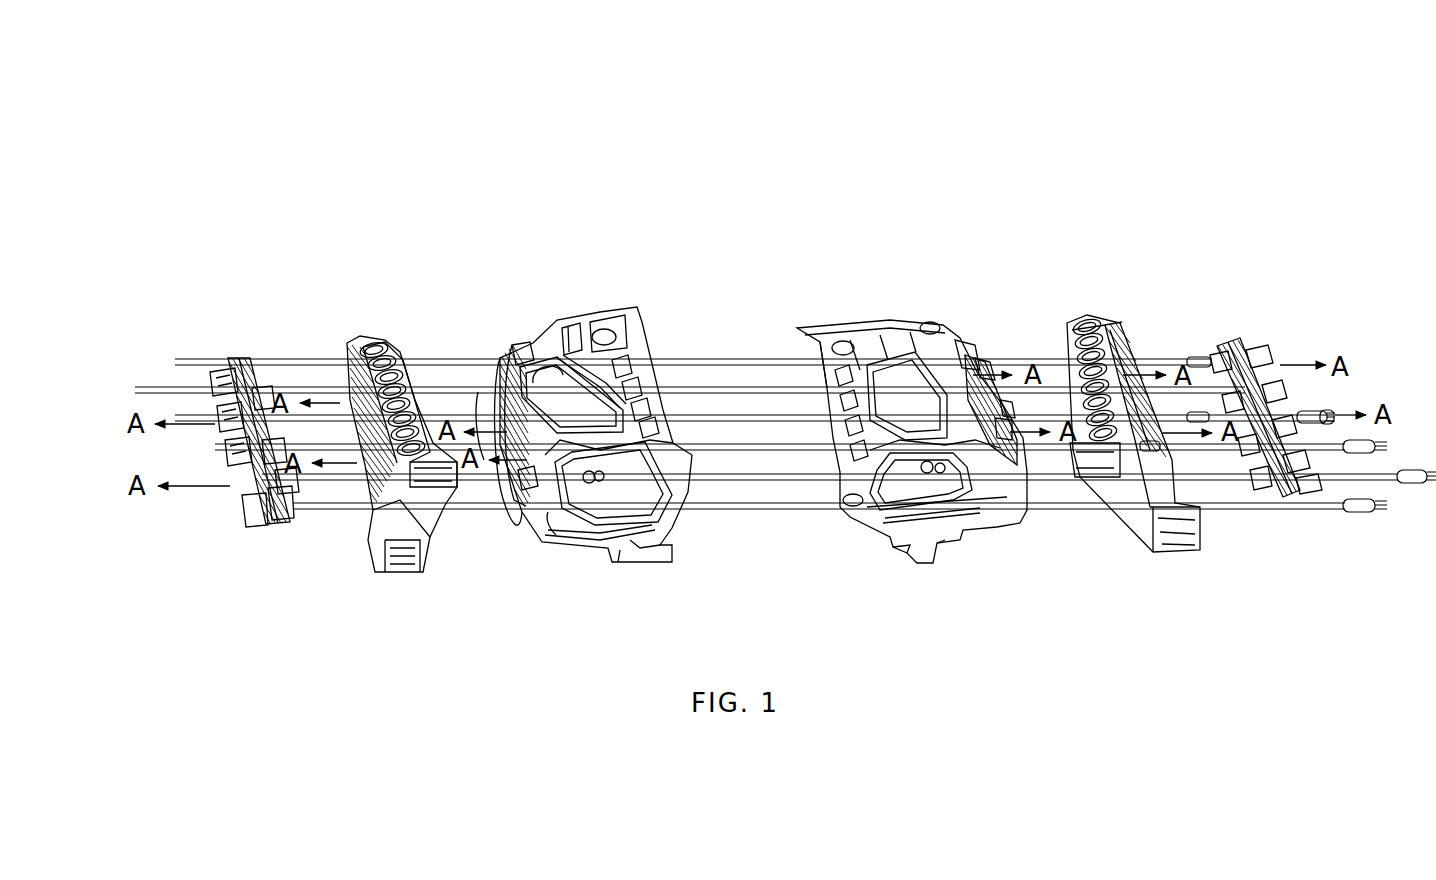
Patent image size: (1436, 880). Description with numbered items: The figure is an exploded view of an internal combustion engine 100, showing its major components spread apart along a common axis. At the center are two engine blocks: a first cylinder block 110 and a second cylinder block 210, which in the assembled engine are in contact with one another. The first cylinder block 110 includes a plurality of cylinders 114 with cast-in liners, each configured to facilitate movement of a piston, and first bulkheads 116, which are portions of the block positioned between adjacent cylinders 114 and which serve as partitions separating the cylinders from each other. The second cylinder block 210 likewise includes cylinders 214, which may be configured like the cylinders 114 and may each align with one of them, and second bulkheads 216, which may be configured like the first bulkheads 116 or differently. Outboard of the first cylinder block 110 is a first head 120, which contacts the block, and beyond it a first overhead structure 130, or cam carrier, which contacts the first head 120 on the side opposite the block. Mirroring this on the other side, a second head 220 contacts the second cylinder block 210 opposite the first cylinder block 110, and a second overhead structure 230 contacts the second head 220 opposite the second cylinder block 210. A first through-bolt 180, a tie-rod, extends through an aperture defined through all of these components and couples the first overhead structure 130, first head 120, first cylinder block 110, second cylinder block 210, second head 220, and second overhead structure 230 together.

The internal combustion engine 100 is at (222, 242).
The first cylinder block 110 is at (548, 322).
The cylinders 114 is at (482, 395).
The first bulkheads 116 is at (514, 420).
The first head 120 is at (370, 352).
The first overhead structure 130 is at (238, 362).
The first through-bolt 180 is at (725, 412).
The second cylinder block 210 is at (885, 322).
The cylinders 214 is at (980, 360).
The second bulkheads 216 is at (970, 363).
The second head 220 is at (1112, 325).
The second overhead structure 230 is at (1250, 338).